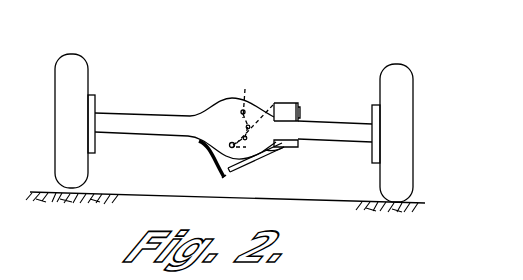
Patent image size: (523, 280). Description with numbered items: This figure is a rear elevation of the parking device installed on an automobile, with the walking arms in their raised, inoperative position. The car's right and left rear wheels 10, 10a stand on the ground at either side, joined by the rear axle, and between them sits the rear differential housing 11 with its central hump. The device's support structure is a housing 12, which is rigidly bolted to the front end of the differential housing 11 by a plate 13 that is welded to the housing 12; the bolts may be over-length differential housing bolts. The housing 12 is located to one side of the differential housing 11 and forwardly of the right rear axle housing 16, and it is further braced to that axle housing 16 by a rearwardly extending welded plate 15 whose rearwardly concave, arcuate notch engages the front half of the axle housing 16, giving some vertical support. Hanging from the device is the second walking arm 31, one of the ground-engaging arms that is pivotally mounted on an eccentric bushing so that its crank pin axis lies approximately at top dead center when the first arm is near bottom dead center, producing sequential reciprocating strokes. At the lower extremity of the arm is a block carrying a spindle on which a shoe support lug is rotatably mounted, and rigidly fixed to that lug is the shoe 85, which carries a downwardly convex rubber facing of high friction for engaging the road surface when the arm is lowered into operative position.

The right rear wheel 10 is at (411, 73).
The left rear wheel 10a is at (86, 58).
The rear differential housing 11 is at (213, 108).
The housing 12 is at (283, 103).
The plate 13 is at (252, 116).
The rearwardly extending welded plate 15 is at (300, 116).
The right rear axle housing 16 is at (352, 141).
The second walking arm 31 is at (250, 161).
The shoe 85 is at (201, 153).